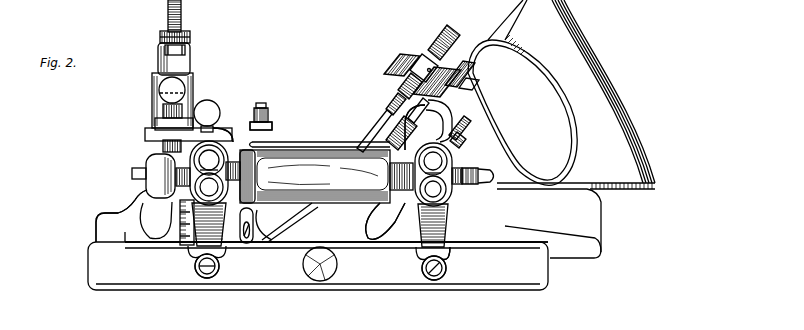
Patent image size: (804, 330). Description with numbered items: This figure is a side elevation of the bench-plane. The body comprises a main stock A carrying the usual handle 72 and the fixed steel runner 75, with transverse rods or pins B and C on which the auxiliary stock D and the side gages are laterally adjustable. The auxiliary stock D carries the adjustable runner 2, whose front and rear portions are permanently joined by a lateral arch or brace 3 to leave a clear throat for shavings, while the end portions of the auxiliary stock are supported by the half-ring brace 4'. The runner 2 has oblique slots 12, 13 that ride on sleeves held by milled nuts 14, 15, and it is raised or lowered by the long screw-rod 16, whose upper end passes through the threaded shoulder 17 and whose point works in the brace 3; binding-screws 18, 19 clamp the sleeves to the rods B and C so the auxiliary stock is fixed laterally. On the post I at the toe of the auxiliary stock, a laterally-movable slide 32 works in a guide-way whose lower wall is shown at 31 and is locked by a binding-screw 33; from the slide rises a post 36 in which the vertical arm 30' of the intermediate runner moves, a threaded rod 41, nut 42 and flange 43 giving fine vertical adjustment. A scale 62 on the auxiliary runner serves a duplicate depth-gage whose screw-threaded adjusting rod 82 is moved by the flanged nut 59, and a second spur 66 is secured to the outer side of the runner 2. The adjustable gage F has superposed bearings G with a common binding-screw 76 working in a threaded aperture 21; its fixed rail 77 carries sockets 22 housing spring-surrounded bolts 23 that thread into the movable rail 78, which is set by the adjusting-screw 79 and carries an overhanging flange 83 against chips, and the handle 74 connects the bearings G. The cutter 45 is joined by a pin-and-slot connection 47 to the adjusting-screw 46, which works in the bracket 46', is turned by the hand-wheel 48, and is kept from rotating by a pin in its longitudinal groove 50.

The threaded rod or spindle 41 is at (169, 7).
The nut 42 is at (190, 37).
The flange 43 is at (167, 49).
The vertical arm 30' is at (191, 59).
The post or bracket 36 is at (193, 86).
The binding-screw 33 is at (160, 91).
The laterally-movable slide 32 is at (157, 128).
The post I is at (145, 135).
The milled nut 15 is at (173, 147).
The lower wall of transverse guide-way 31 is at (208, 105).
The rod or pin C is at (216, 127).
The binding-screw 19 is at (210, 157).
The screw-threaded adjusting rod 82 is at (262, 103).
The flanged nut 59 is at (272, 119).
The binding-screw 76 is at (150, 177).
The threaded aperture 21 is at (176, 166).
The double sleeve or socket G is at (190, 187).
The steel blade or runner 75 is at (108, 212).
The scale 62 is at (190, 207).
The adjustable blade or runner 2 is at (97, 230).
The oblique slot 12 is at (142, 222).
The adjustable gage F is at (219, 221).
The integral sockets 22 is at (197, 268).
The bolt 23 is at (207, 276).
The second spur 66 is at (250, 242).
The rod 4' is at (320, 136).
The handle 74 is at (326, 176).
The rod or pin B is at (453, 169).
The lateral arch or brace 3 is at (311, 210).
The oblique slot 13 is at (366, 214).
The auxiliary stock D is at (400, 199).
The overhanging flange 83 is at (350, 248).
The adjusting-screw 79 is at (320, 279).
The main or fixed rail 77 is at (393, 281).
The auxiliary rail 78 is at (477, 262).
The cutter 45 is at (381, 131).
The pin-and-slot connection 47 is at (388, 106).
The hand-wheel 48 is at (396, 62).
The bracket 46' is at (423, 56).
The adjusting-screw 46 is at (444, 36).
The longitudinal slot or groove 50 is at (463, 61).
The long screw-rod 16 is at (473, 86).
The threaded shoulder 17 is at (448, 108).
The binding-screw 18 is at (471, 124).
The milled nut 14 is at (466, 141).
The main stock A is at (505, 158).
The handle 72 is at (603, 91).